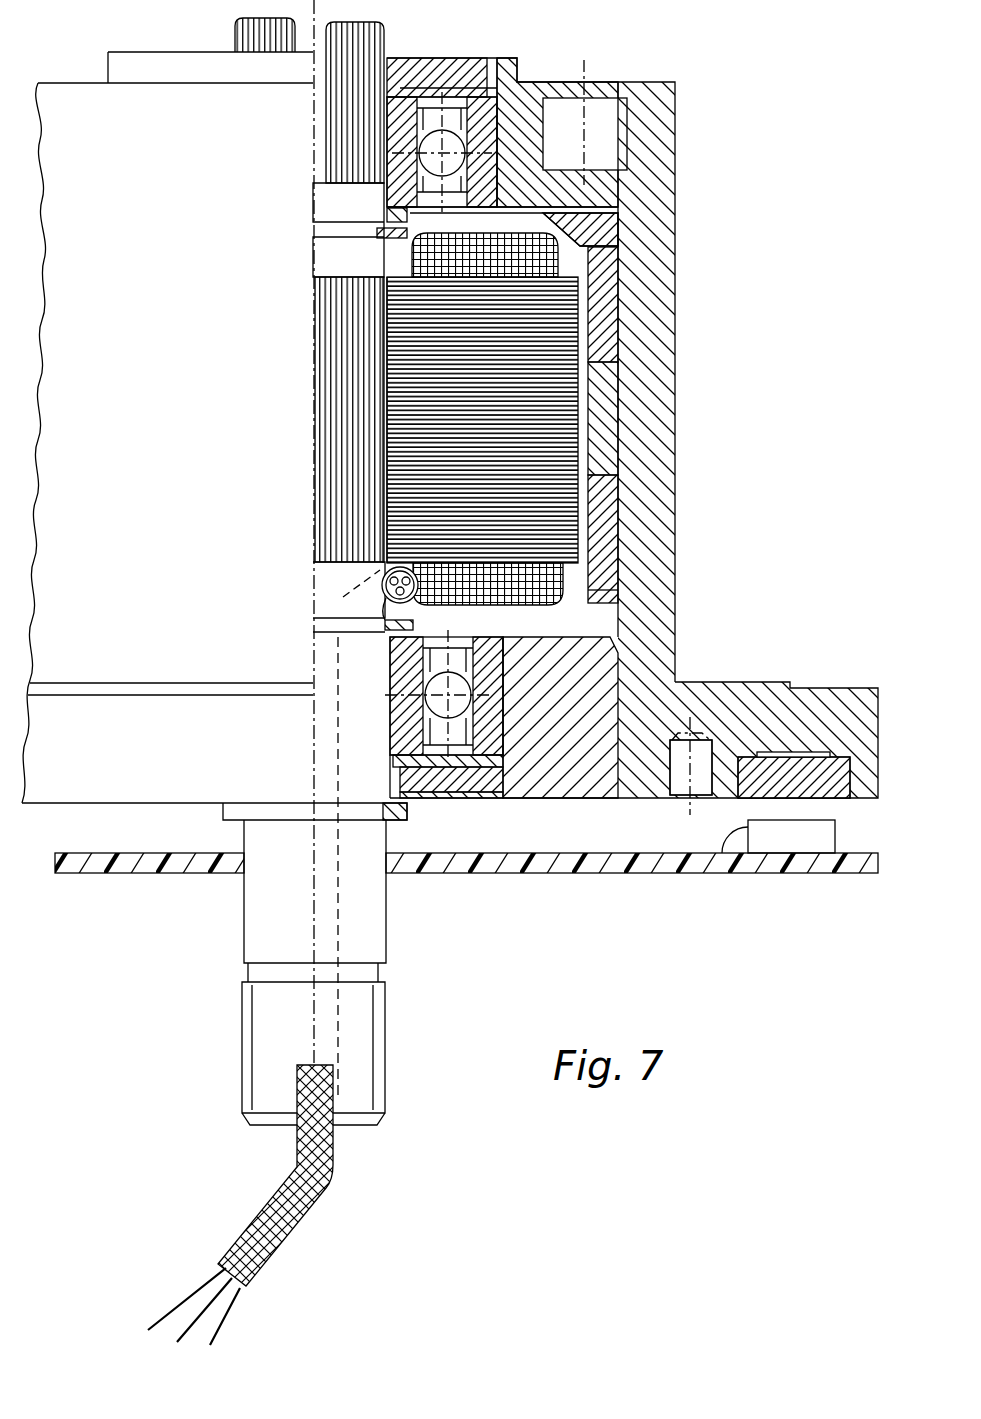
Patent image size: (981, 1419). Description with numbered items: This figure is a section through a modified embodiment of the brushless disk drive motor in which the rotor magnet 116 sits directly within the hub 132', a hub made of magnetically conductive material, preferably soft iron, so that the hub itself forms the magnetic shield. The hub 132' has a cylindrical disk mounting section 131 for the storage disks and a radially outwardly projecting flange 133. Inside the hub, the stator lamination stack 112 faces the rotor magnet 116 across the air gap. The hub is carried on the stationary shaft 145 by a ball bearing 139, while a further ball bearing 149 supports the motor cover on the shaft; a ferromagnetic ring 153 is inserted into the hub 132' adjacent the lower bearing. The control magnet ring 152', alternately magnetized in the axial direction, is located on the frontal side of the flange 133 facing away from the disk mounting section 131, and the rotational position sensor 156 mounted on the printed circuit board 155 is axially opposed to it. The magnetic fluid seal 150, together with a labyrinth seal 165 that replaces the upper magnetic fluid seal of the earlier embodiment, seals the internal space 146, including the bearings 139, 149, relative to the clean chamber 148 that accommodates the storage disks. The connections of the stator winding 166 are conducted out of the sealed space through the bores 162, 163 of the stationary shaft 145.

The stator lamination stack 112 is at (557, 500).
The rotor magnet 116 is at (623, 405).
The disk mounting section 131 is at (675, 337).
The hub 132' is at (718, 585).
The flange 133 is at (817, 703).
The ball bearing 139 is at (487, 177).
The stationary shaft 145 is at (386, 925).
The internal space 146 is at (587, 634).
The clean chamber 148 is at (763, 277).
The ball bearing 149 is at (390, 735).
The magnetic fluid seal 150 is at (463, 780).
The control magnet ring 152' is at (794, 714).
The ferromagnetic ring 153 is at (587, 773).
The printed circuit board 155 is at (670, 860).
The rotational position sensor 156 is at (788, 837).
The bore 162 is at (343, 602).
The bore 163 is at (333, 922).
The labyrinth seal 165 is at (457, 82).
The stator winding 166 is at (190, 1293).